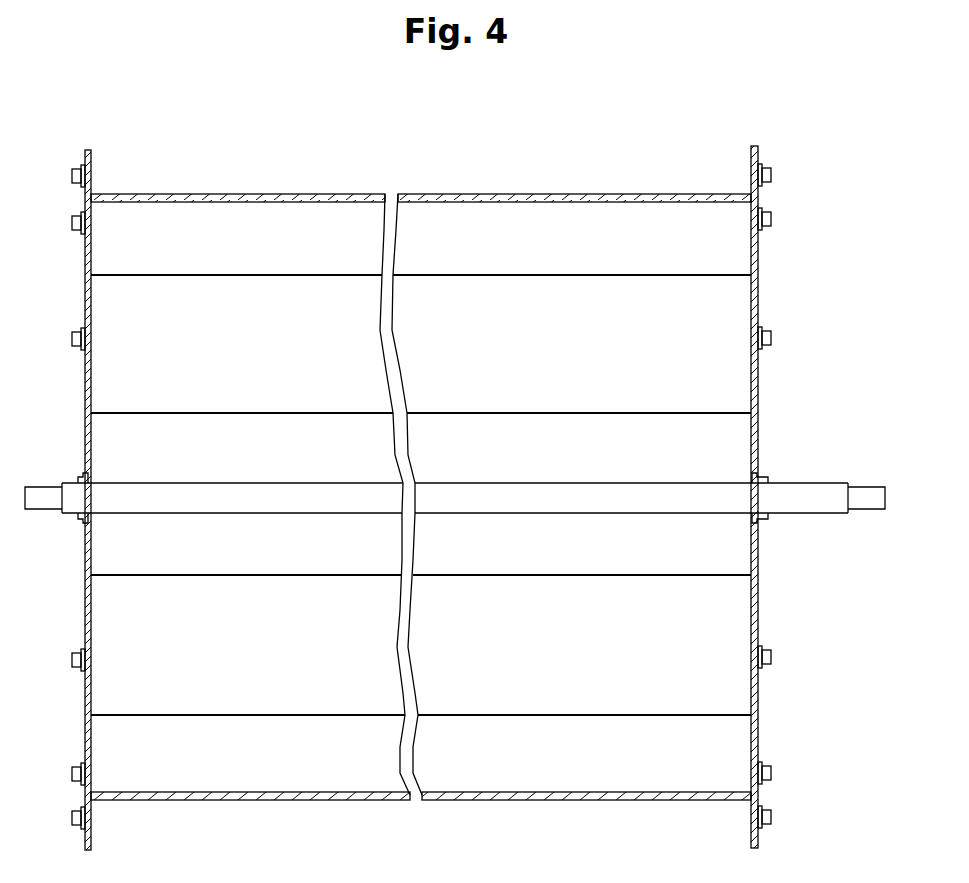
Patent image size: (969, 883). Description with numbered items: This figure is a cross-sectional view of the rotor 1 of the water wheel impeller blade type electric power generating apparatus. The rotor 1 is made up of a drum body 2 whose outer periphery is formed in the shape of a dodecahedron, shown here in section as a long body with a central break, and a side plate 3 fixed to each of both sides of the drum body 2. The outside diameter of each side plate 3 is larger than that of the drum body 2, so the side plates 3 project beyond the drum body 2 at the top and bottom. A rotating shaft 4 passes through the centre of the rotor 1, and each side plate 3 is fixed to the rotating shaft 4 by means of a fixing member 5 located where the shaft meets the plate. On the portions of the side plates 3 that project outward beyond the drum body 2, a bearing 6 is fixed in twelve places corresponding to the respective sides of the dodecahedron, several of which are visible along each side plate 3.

The rotor 1 is at (798, 240).
The drum body 2 is at (735, 258).
The side plate 3 is at (85, 293).
The rotating shaft 4 is at (830, 497).
The fixing member 5 is at (80, 472).
The bearing 6 is at (72, 172).